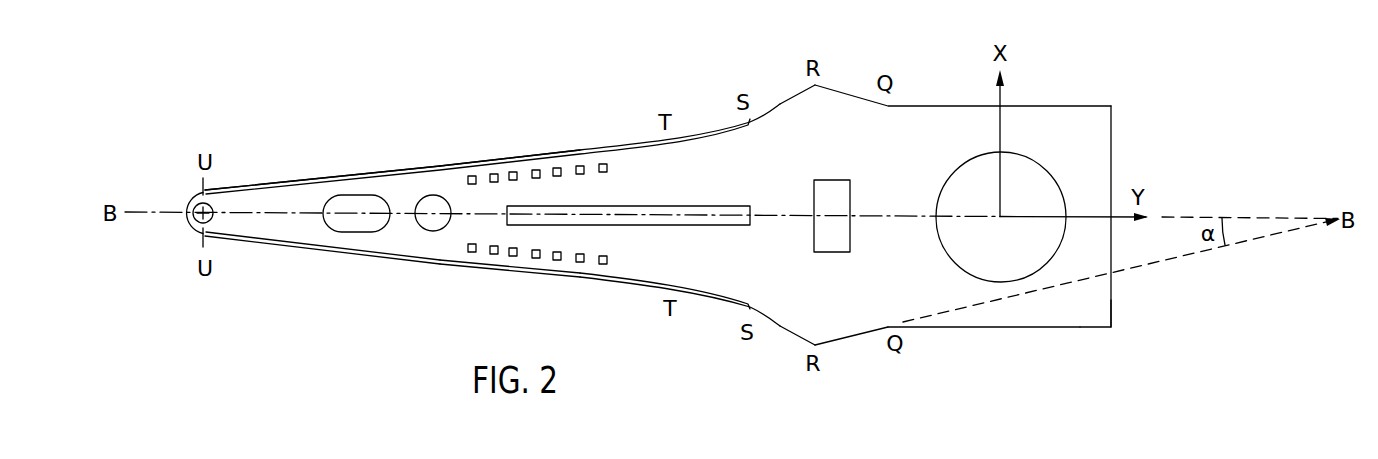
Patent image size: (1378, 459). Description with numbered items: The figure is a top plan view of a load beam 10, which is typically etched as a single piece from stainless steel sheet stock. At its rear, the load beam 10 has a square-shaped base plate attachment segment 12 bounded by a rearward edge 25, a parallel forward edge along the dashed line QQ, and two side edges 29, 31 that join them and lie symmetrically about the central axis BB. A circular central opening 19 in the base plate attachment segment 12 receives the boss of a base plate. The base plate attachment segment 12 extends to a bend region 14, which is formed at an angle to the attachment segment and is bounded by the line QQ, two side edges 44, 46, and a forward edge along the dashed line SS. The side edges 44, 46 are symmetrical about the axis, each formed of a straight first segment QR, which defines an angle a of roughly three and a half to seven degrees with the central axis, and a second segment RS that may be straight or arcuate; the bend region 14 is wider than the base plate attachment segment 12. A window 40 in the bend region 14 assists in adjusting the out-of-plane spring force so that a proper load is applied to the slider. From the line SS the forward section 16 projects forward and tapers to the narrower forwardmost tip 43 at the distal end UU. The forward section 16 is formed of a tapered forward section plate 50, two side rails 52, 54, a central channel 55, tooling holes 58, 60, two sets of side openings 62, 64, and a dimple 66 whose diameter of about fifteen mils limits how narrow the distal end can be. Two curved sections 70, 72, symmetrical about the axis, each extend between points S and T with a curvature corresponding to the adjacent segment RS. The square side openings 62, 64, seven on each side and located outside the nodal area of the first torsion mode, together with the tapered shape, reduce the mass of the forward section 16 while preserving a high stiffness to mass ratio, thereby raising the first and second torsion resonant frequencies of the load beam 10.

The load beam 10 is at (446, 105).
The base plate attachment segment 12 is at (1015, 317).
The bend region 14 is at (780, 333).
The forward section 16 is at (386, 272).
The circular central opening 19 is at (1018, 155).
The rearward edge 25 is at (1112, 143).
The side edge 29 is at (1087, 328).
The side edge 31 is at (1076, 105).
The window 40 is at (830, 180).
The forwardmost tip 43 is at (192, 209).
The side edge 44 is at (853, 342).
The side edge 46 is at (779, 98).
The tapered forward section plate 50 is at (397, 172).
The side rail 52 is at (503, 271).
The side rail 54 is at (490, 161).
The central channel 55 is at (625, 206).
The tooling hole 58 is at (349, 233).
The tooling hole 60 is at (430, 231).
The side openings 62 is at (578, 263).
The side openings 64 is at (578, 166).
The dimple 66 is at (194, 226).
The curved section 70 is at (703, 294).
The curved section 72 is at (694, 133).